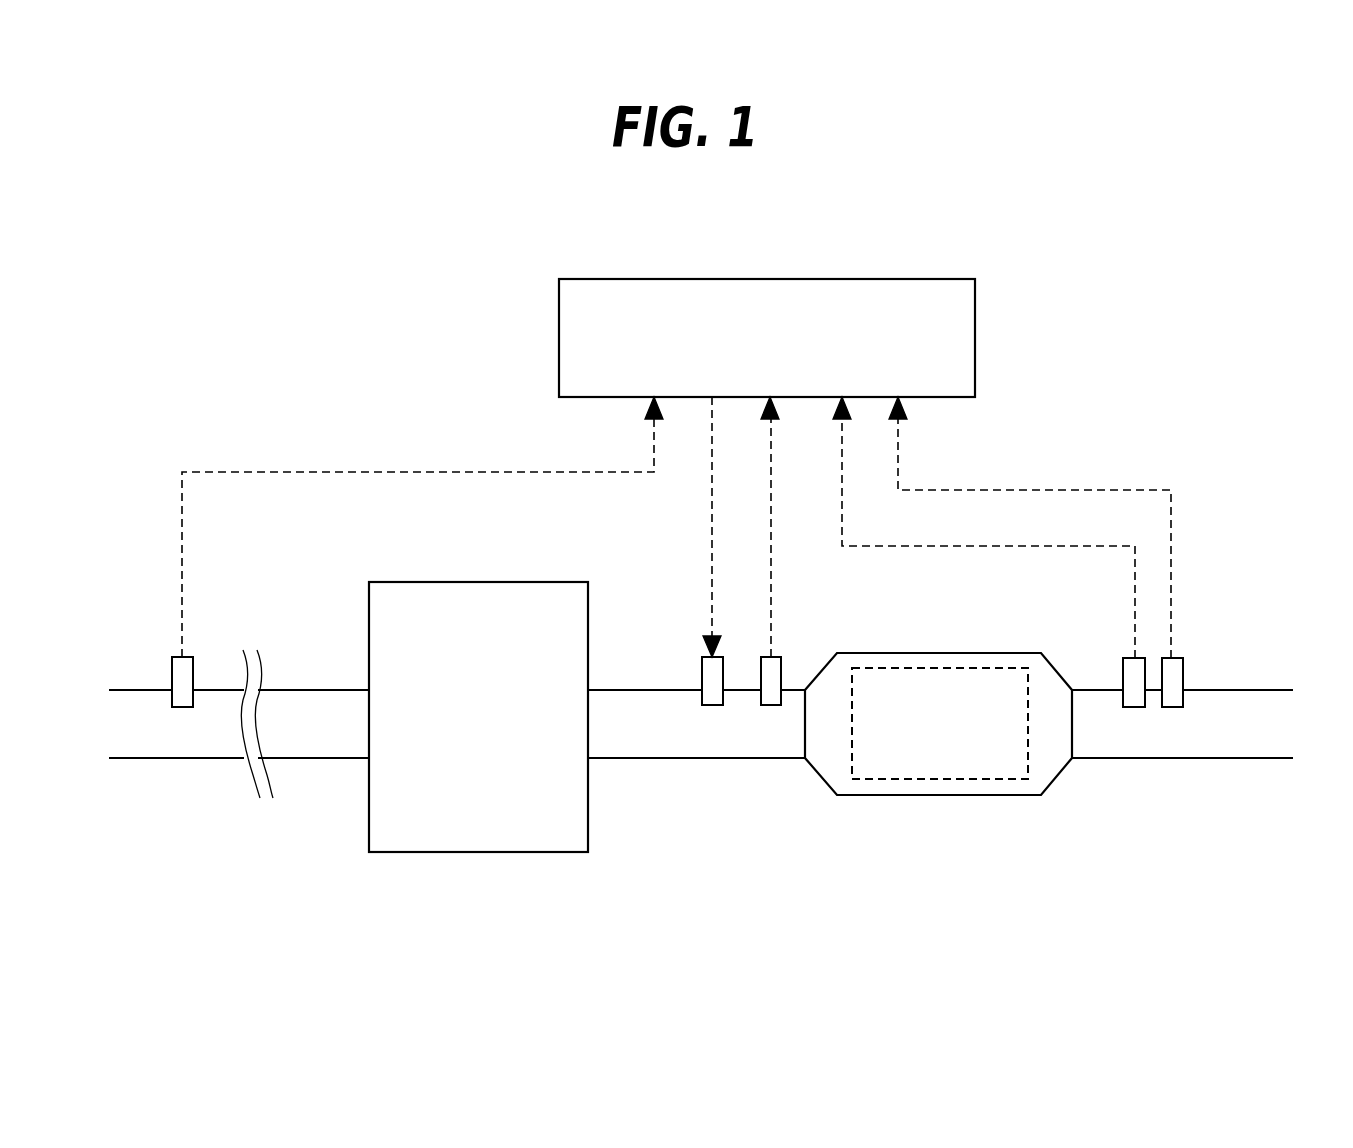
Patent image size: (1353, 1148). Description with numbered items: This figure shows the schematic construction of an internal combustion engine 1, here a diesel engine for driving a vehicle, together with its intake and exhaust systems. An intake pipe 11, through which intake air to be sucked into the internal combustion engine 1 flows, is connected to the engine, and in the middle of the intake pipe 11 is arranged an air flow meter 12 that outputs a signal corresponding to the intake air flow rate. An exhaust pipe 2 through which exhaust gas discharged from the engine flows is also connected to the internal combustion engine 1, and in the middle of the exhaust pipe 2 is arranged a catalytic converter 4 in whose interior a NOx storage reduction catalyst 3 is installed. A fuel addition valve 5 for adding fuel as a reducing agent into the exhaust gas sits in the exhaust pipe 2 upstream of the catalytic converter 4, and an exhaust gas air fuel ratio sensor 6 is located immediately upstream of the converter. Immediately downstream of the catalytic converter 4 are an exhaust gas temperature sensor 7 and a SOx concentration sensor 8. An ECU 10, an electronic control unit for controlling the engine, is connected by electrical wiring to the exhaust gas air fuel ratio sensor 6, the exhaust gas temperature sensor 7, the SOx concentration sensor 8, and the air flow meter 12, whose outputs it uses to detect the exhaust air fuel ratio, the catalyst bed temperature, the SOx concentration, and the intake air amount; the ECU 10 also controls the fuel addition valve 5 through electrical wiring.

The internal combustion engine 1 is at (442, 582).
The exhaust pipe 2 is at (658, 760).
The NOx storage reduction catalyst 3 is at (938, 668).
The catalytic converter 4 is at (935, 795).
The fuel addition valve 5 is at (702, 662).
The exhaust gas air fuel ratio sensor 6 is at (782, 665).
The exhaust gas temperature sensor 7 is at (1123, 672).
The SOx concentration sensor 8 is at (1183, 678).
The ECU 10 is at (975, 357).
The intake pipe 11 is at (313, 759).
The air flow meter 12 is at (193, 667).